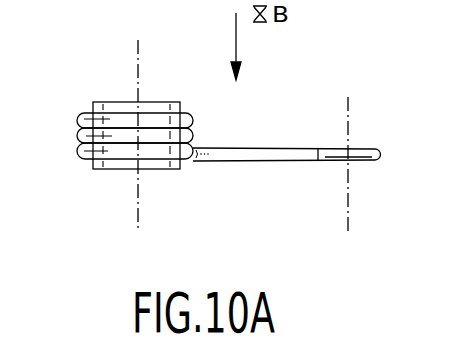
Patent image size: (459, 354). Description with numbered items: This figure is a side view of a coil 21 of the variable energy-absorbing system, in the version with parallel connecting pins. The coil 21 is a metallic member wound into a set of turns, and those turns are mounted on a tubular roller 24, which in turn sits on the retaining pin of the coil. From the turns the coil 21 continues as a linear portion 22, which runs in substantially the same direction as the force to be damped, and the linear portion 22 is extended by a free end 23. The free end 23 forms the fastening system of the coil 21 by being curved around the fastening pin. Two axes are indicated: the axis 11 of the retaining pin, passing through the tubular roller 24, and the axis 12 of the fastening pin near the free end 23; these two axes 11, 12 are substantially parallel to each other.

The axis of the retaining pin 11 is at (138, 67).
The axis of the fastening pin 12 is at (348, 97).
The coil 21 is at (78, 137).
The linear portion 22 is at (243, 155).
The free end 23 is at (373, 162).
The tubular roller 24 is at (118, 166).